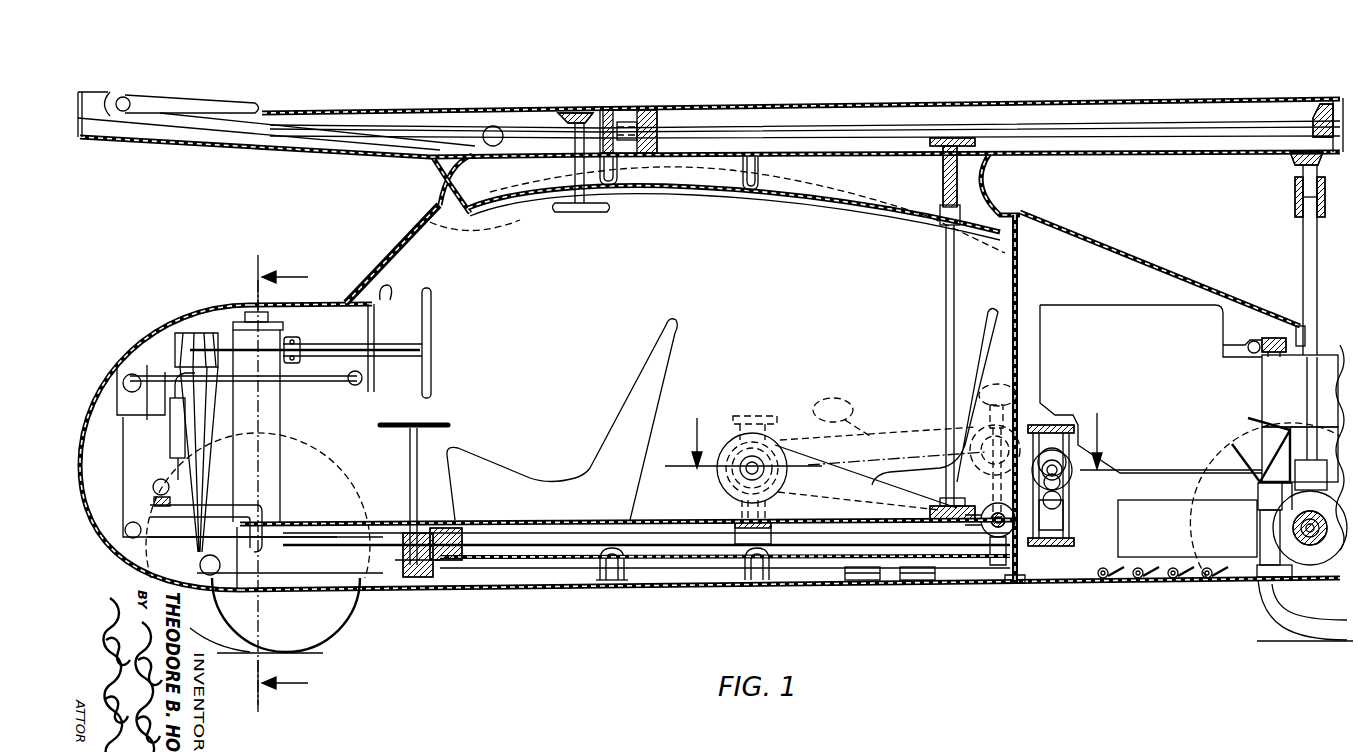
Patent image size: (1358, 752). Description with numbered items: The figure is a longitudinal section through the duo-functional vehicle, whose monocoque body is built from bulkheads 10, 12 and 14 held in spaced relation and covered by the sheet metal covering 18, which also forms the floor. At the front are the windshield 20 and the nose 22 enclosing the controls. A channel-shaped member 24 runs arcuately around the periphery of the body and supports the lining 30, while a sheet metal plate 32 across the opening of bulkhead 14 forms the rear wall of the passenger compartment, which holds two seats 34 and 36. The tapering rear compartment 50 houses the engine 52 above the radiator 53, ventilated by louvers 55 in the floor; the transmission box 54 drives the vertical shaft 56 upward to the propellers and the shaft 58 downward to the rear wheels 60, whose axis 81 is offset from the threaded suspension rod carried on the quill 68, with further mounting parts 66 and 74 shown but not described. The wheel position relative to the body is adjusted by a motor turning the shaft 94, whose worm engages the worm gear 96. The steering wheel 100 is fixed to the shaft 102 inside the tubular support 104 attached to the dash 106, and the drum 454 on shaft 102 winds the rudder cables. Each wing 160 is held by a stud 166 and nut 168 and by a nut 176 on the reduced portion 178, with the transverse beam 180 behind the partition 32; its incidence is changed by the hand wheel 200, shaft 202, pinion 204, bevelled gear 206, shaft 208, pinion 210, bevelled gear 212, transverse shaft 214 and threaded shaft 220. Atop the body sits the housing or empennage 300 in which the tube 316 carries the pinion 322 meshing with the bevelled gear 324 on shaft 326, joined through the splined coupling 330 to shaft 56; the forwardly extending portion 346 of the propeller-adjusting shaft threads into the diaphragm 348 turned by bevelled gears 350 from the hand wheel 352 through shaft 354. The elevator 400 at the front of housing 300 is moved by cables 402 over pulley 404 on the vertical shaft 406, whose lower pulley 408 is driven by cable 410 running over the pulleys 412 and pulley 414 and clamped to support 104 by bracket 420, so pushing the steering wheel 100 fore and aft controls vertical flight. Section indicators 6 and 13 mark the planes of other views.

The section line 6- 6 is at (963, 467).
The bulkhead 10 is at (620, 584).
The bulkhead 12 is at (766, 584).
The section line 13- 13 is at (296, 483).
The bulkhead 14 is at (1020, 584).
The sheet metal covering 18 is at (1102, 246).
The windshield 20 is at (415, 236).
The nose 22 is at (228, 308).
The channel-shaped member 24 is at (754, 193).
The lining 30 is at (724, 196).
The sheet metal plate 32 is at (1010, 289).
The seat 34 is at (540, 472).
The seat 36 is at (872, 468).
The compartment 50 is at (1148, 266).
The engine 52 is at (1200, 300).
The radiator 53 is at (1163, 577).
The transmission box 54 is at (1270, 378).
The louvers 55 is at (1185, 580).
The vertically disposed shaft 56 is at (1318, 262).
The downwardly extending shaft 58 is at (1279, 442).
The wheels 60 is at (1245, 598).
The wheel bearing block 66 is at (1260, 500).
The quill 68 is at (1262, 547).
The brace 74 is at (1251, 453).
The axis of the rear wheel 81 is at (1328, 537).
The shaft 94 is at (1225, 333).
The worm gear 96 is at (1247, 348).
The steering wheel 100 is at (433, 300).
The shaft 102 is at (284, 348).
The tubular support 104 is at (398, 342).
The dash 106 is at (372, 308).
The wing 160 is at (881, 454).
The cylindrical stud 166 is at (735, 486).
The nut 168 is at (770, 438).
The nut 176 is at (1075, 518).
The reduced portion 178 is at (1072, 466).
The channel beam 180 is at (1074, 490).
The hand wheel 200 is at (445, 422).
The shaft 202 is at (410, 460).
The pinion 204 is at (403, 555).
The bevelled gear 206 is at (466, 522).
The shaft 208 is at (655, 540).
The pinion 210 is at (986, 504).
The bevelled gear 212 is at (1010, 524).
The transverse shaft 214 is at (1008, 517).
The threaded shaft 220 is at (995, 451).
The housing or empennage 300 is at (722, 100).
The tube 316 is at (1348, 100).
The pinion 322 is at (1320, 110).
The bevelled gear 324 is at (1293, 160).
The shaft 326 is at (1306, 178).
The splined coupling 330 is at (1323, 205).
The forwardly extending portion 346 is at (1072, 122).
The diaphragm 348 is at (660, 110).
The bevelled gears 350 is at (590, 113).
The hand wheel 352 is at (598, 205).
The shaft 354 is at (586, 170).
The elevator 400 is at (222, 98).
The cables 402 is at (395, 128).
The pulley 404 is at (952, 137).
The vertical shaft 406 is at (945, 254).
The pulley 408 is at (942, 505).
The cable 410 is at (550, 520).
The pulleys 412 is at (165, 424).
The pulley 414 is at (356, 386).
The bracket 420 is at (302, 340).
The drum 454 is at (170, 330).